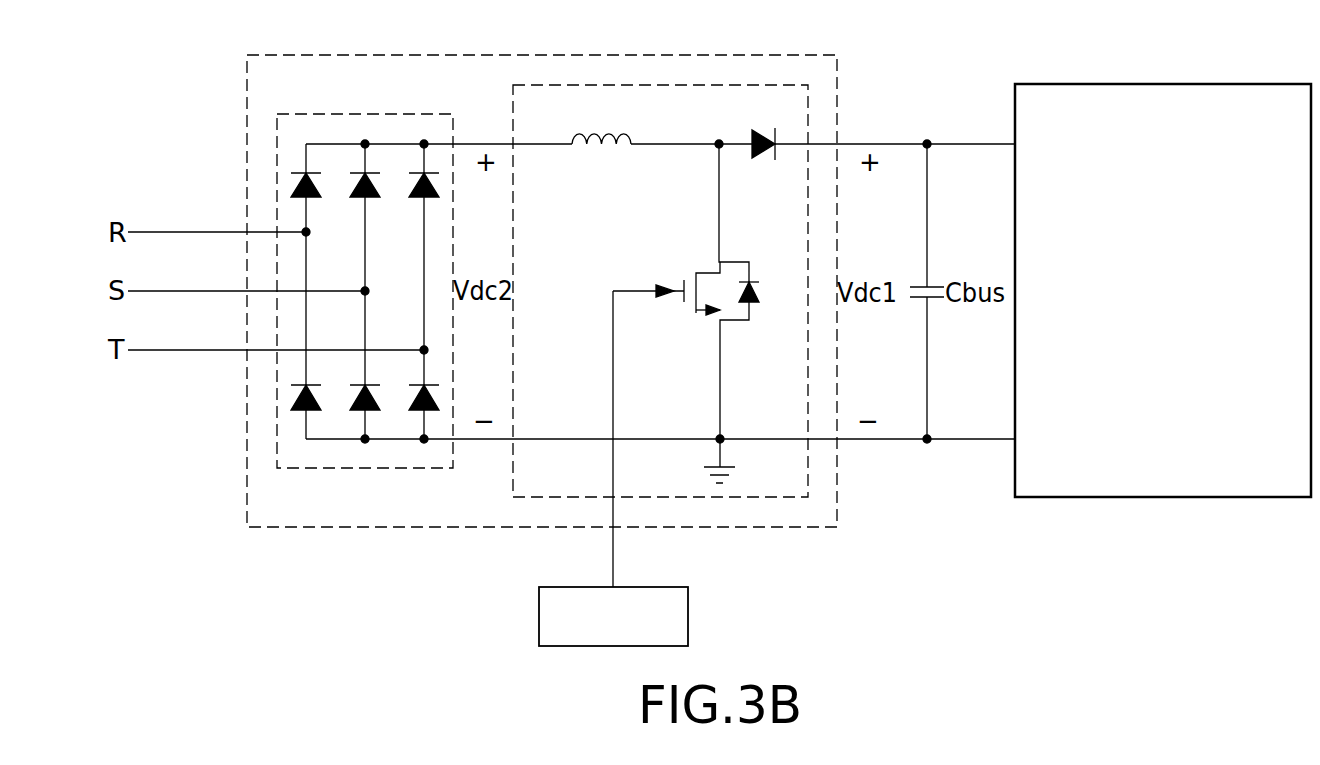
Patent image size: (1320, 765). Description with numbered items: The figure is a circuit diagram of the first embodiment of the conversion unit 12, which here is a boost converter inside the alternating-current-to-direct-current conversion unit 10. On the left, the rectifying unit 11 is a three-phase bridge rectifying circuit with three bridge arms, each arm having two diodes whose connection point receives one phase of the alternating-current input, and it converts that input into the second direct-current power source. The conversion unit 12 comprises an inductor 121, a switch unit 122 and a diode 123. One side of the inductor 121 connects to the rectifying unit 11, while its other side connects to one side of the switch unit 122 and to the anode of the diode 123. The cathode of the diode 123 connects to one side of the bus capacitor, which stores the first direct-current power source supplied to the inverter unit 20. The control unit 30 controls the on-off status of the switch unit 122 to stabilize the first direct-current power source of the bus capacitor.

The alternating-current-to-direct-current conversion unit 10 is at (557, 62).
The rectifying unit 11 is at (366, 119).
The conversion unit 12 is at (662, 92).
The inductor 121 is at (595, 148).
The switch unit 122 is at (706, 264).
The diode 123 is at (767, 158).
The inverter unit 20 is at (1162, 90).
The control unit 30 is at (601, 592).